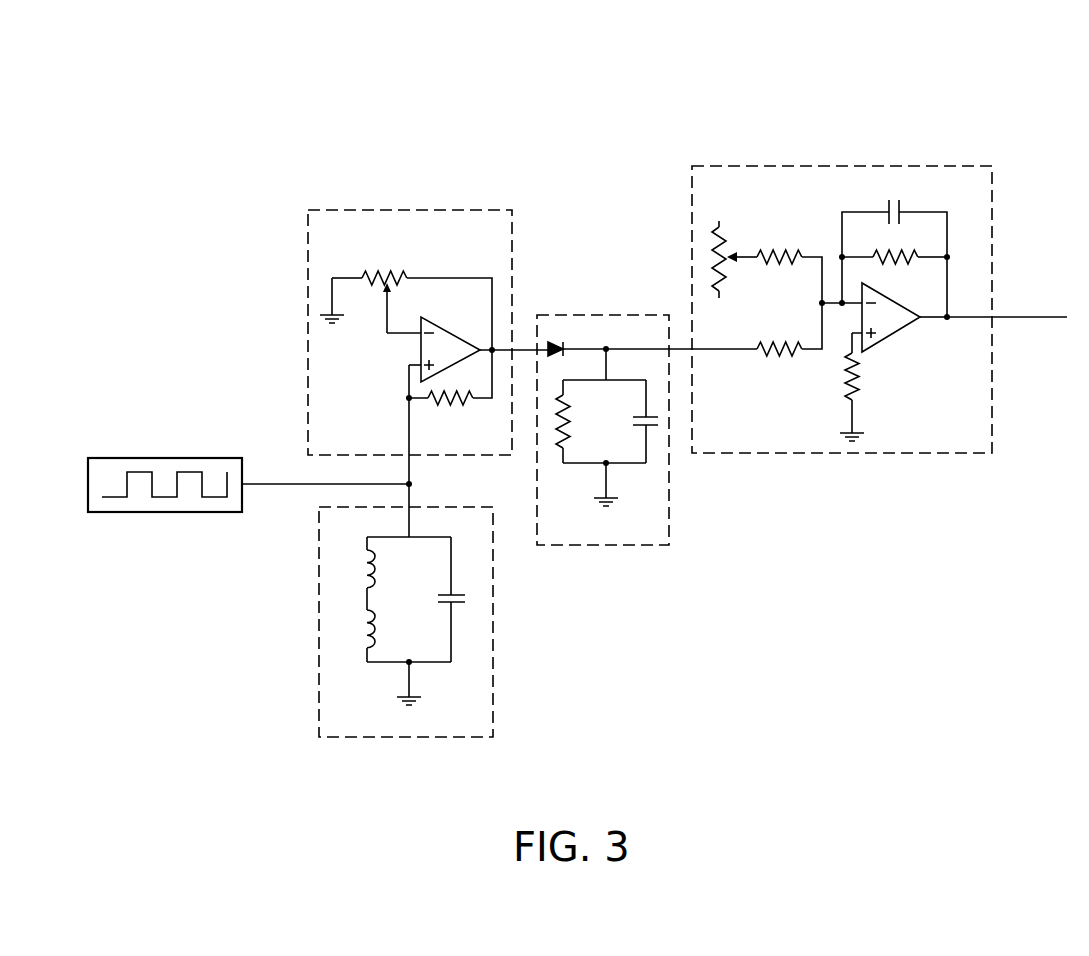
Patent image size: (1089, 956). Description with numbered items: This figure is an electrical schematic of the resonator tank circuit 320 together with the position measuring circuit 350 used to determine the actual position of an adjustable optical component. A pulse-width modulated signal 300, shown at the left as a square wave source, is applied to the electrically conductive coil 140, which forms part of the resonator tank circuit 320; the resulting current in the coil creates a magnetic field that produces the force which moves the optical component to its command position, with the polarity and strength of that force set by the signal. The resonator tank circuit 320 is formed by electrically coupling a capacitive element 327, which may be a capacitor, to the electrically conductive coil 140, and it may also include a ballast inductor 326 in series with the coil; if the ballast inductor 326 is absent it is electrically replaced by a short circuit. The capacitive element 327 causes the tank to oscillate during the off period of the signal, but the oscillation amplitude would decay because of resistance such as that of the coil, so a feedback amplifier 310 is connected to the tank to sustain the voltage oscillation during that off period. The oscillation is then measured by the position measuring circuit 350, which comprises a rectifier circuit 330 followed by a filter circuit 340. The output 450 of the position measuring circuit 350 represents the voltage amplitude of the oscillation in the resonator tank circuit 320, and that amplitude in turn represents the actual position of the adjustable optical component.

The pulse-width modulated signal 300 is at (137, 436).
The feedback amplifier 310 is at (410, 210).
The resonator tank circuit 320 is at (409, 622).
The ballast inductor 326 is at (353, 570).
The electrically conductive coil 140 is at (353, 630).
The capacitive element 327 is at (472, 598).
The rectifier circuit 330 is at (603, 315).
The filter circuit 340 is at (842, 166).
The position measuring circuit 350 is at (993, 85).
The output 450 is at (1030, 317).